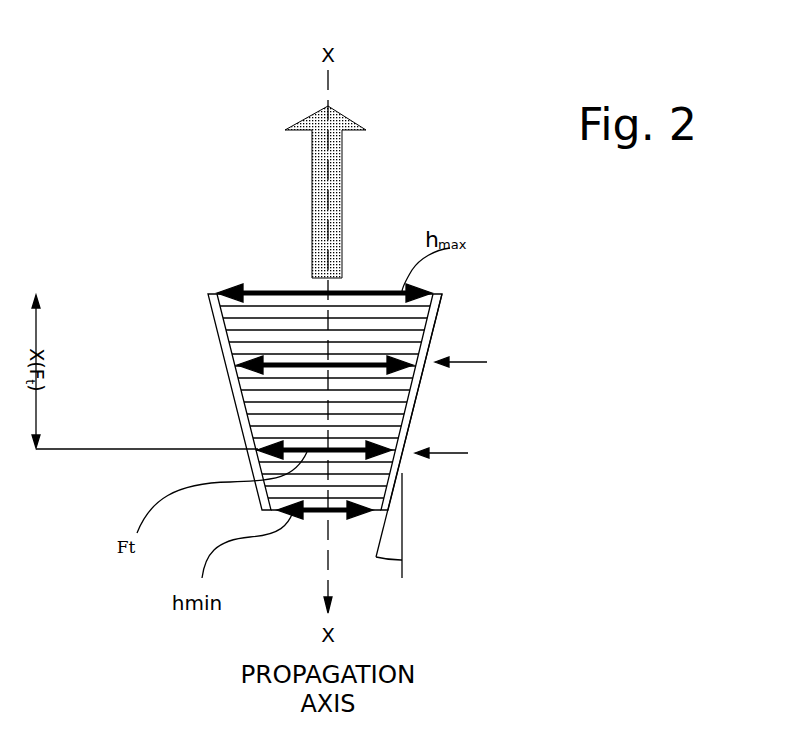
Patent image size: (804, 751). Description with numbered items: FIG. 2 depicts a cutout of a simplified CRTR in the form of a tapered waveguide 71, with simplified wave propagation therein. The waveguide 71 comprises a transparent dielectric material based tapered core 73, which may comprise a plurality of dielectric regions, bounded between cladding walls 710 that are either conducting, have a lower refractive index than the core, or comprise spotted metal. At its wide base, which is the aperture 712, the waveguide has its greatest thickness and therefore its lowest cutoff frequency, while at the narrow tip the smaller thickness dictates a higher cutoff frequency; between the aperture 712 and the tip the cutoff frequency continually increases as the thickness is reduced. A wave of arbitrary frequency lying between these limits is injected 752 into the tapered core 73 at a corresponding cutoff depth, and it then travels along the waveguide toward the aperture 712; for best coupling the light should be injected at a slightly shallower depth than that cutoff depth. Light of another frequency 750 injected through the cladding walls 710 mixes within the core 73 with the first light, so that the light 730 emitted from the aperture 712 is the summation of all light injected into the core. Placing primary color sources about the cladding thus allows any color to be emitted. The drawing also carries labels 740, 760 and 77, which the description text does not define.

The light emitted from the CRTR aperture 730 is at (340, 165).
The aperture 712 is at (251, 292).
The cladding walls 710 is at (210, 293).
The tapered core 73 is at (272, 434).
The tapered waveguide 71 is at (427, 388).
The light of frequency Fr 750 is at (484, 370).
The injected light of frequency Ft 752 is at (466, 454).
The rear face of transducer body 740 is at (318, 548).
The wall inclination angle 760 is at (388, 542).
The angle reference 77 is at (608, 572).